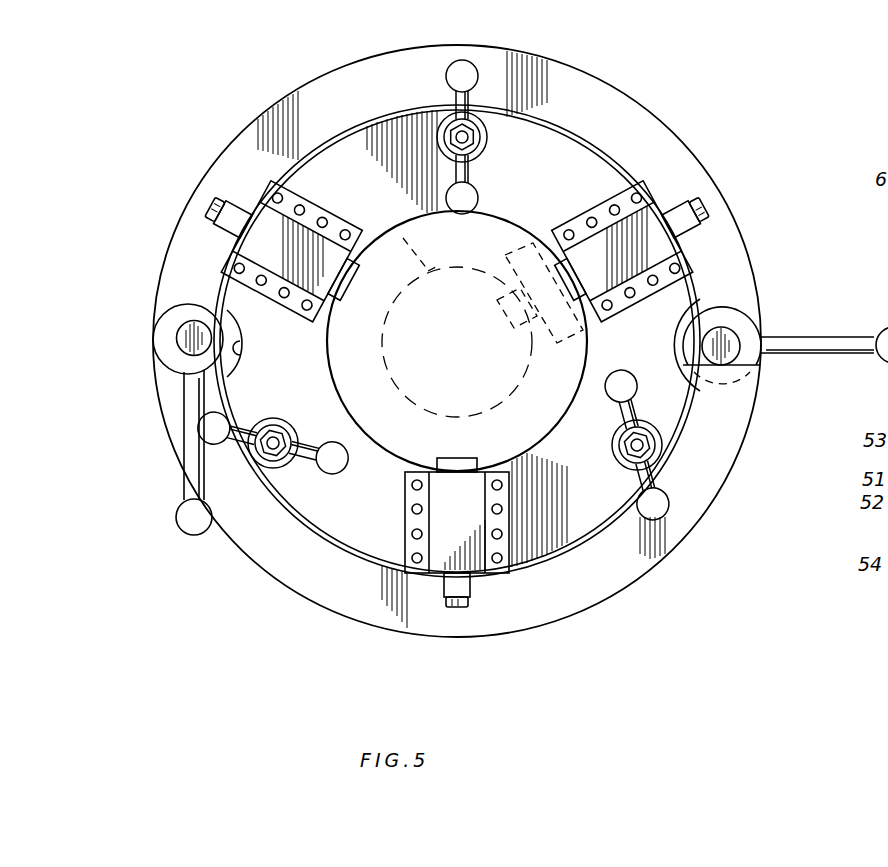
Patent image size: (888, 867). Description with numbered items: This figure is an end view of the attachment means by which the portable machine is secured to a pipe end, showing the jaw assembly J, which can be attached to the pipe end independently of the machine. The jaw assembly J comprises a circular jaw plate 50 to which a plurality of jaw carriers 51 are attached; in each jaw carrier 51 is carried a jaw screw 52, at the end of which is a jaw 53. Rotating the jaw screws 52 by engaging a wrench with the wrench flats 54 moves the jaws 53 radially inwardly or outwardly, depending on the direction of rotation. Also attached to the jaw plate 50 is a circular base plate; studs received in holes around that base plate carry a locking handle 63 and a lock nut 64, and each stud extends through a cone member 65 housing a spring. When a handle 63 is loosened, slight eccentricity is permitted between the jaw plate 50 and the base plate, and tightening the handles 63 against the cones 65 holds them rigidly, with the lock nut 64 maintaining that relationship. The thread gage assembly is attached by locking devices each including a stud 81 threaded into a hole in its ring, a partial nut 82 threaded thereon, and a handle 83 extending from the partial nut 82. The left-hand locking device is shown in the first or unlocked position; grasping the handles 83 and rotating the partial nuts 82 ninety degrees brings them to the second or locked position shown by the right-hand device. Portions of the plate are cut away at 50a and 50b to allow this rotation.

The jaw assembly J is at (545, 150).
The circular jaw plate 50 is at (565, 152).
The cut-away portion 50a is at (238, 352).
The cut-away portion 50b is at (676, 329).
The jaw carrier 51 is at (315, 240).
The jaw screw 52 is at (238, 208).
The jaw 53 is at (338, 272).
The wrench flats 54 is at (228, 205).
The locking handle 63 is at (466, 170).
The lock nut 64 is at (471, 137).
The cone member 65 is at (442, 123).
The stud 81 is at (184, 343).
The partial nut 82 is at (180, 311).
The handle 83 is at (193, 468).